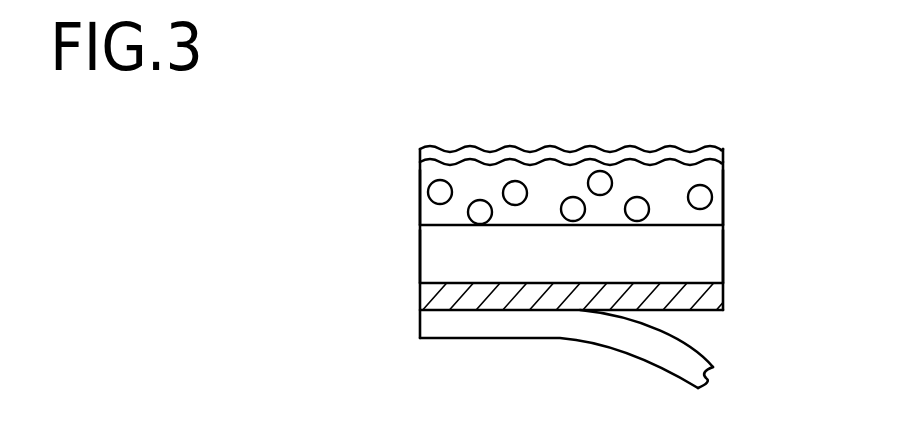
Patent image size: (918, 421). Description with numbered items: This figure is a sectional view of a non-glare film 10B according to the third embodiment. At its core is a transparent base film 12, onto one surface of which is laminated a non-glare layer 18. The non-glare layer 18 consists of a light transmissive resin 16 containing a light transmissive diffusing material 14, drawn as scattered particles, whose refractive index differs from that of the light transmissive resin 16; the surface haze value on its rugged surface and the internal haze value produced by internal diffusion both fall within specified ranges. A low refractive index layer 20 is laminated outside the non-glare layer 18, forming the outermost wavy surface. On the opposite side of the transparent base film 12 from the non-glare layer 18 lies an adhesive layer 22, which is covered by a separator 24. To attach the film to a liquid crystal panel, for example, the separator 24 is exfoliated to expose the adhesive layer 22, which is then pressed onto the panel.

The non-glare film 10B is at (403, 167).
The transparent base film 12 is at (702, 263).
The light transmissive diffusing material 14 is at (700, 197).
The light transmissive resin 16 is at (672, 217).
The non-glare layer 18 is at (820, 177).
The low refractive index layer 20 is at (652, 155).
The adhesive layer 22 is at (707, 297).
The separator 24 is at (695, 375).